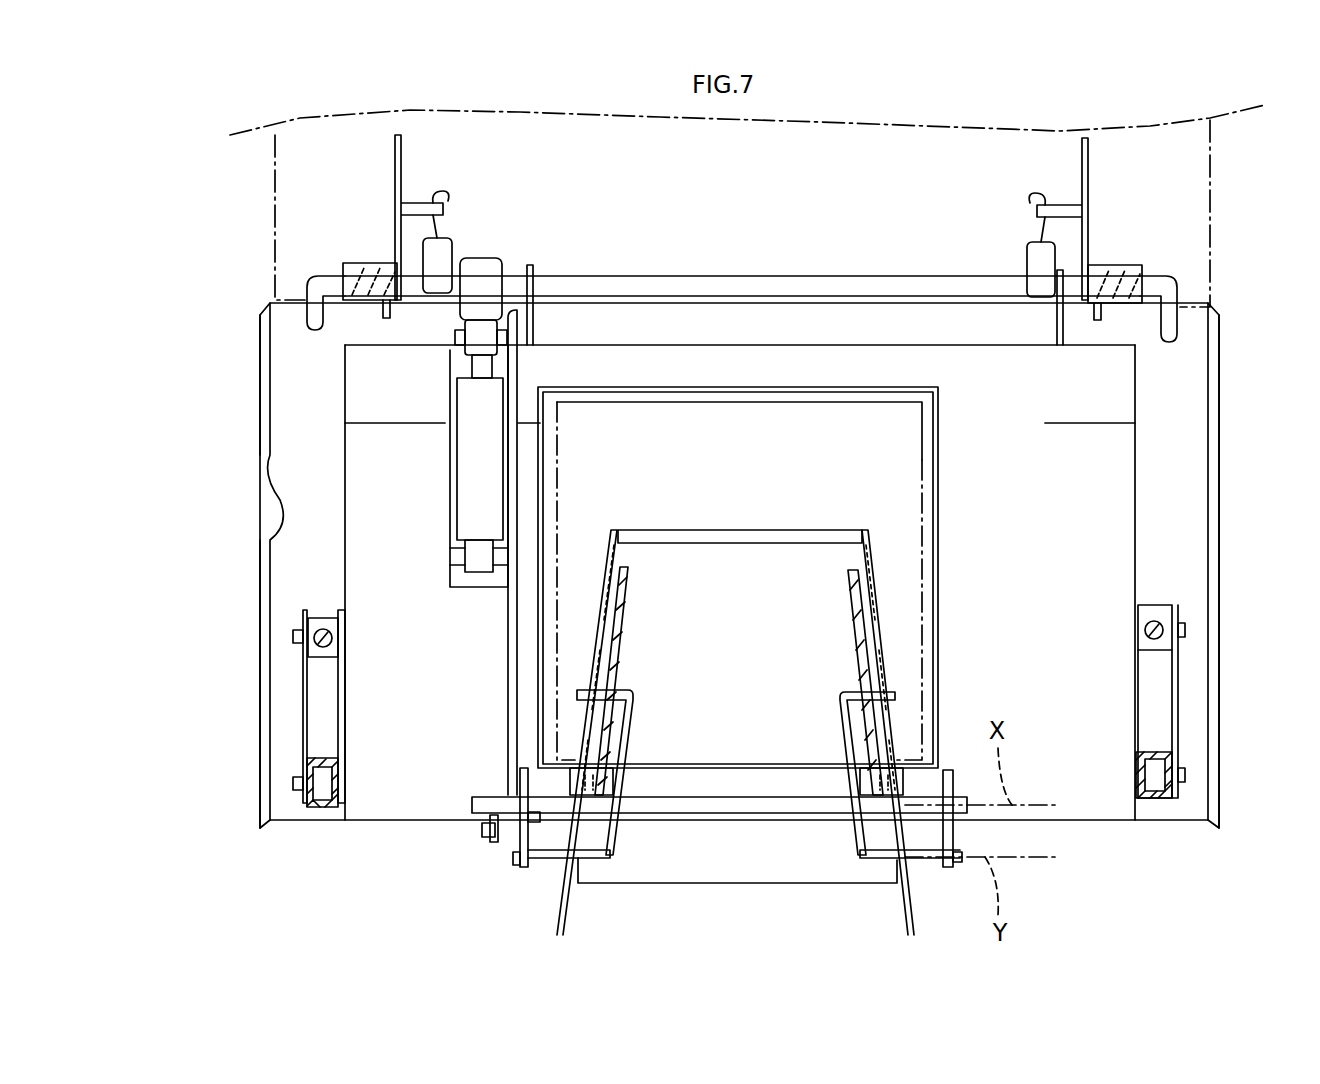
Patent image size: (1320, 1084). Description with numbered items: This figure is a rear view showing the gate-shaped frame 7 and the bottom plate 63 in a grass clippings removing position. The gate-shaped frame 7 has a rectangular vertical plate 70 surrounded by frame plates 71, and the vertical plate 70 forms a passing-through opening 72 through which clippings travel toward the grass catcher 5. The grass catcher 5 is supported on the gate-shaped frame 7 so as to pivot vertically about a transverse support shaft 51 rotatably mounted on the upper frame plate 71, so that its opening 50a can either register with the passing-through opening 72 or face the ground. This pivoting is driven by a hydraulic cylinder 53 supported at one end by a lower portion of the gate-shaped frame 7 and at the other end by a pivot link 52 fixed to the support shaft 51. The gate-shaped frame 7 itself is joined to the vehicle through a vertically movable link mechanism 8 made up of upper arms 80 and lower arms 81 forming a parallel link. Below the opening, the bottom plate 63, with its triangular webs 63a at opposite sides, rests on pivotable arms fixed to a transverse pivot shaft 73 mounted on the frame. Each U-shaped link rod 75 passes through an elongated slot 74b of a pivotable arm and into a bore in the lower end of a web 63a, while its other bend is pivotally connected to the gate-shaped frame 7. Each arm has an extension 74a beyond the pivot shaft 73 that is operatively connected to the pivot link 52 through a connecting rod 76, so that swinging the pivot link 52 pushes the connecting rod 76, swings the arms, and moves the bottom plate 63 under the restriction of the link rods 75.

The grass catcher 5 is at (267, 222).
The gate-shaped frame 7 is at (1227, 307).
The vertically movable link mechanism 8 is at (297, 695).
The opening 50a is at (923, 543).
The transverse support shaft 51 is at (737, 285).
The pivot link 52 is at (485, 268).
The hydraulic cylinder 53 is at (467, 458).
The bottom plate 63 is at (737, 552).
The webs 63a is at (597, 665).
The vertical plate 70 is at (985, 382).
The frame plates 71 is at (635, 320).
The passing-through opening 72 is at (865, 508).
The transverse pivot shaft 73 is at (727, 800).
The extension 74a is at (493, 843).
The slot 74b is at (620, 632).
The link rods 75 is at (633, 745).
The connecting rod 76 is at (506, 686).
The upper arms 80 is at (318, 638).
The lower arms 81 is at (318, 760).